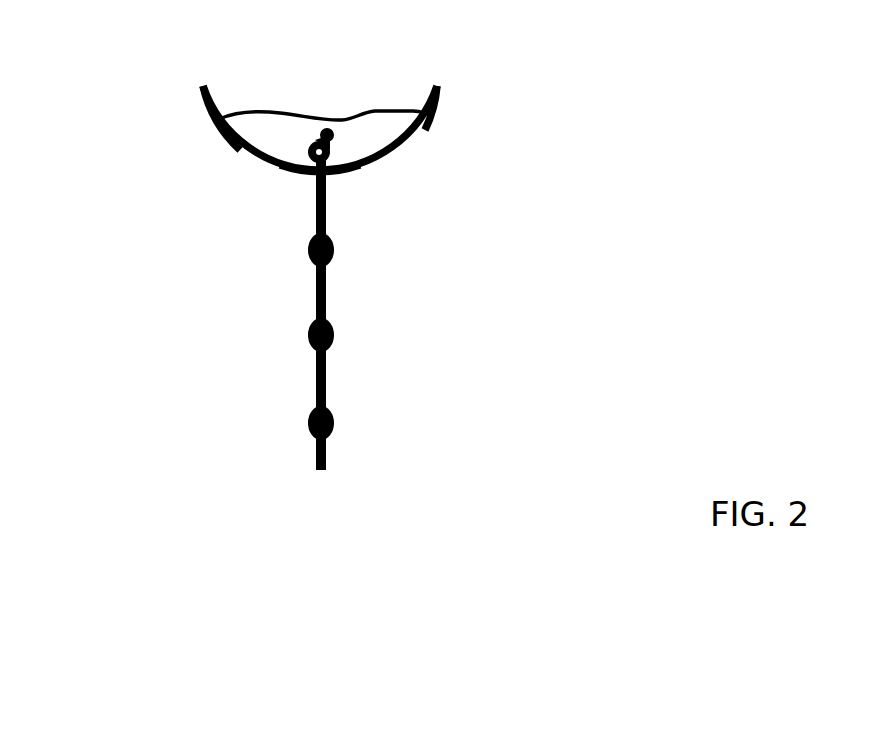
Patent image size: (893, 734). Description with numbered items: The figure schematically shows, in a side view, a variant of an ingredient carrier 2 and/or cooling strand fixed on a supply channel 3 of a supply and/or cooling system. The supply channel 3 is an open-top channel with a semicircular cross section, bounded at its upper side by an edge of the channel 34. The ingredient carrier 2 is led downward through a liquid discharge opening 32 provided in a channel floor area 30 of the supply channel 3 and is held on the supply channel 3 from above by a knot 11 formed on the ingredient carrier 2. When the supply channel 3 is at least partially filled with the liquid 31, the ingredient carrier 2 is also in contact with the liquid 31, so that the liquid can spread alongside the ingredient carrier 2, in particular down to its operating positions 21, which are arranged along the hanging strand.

The ingredient carrier 2 is at (326, 387).
The operating positions 21 is at (333, 250).
The supply channel 3 is at (441, 105).
The edge of the channel 34 is at (439, 82).
The channel floor area 30 is at (218, 138).
The liquid 31 is at (368, 145).
The knot 11 is at (336, 160).
The liquid discharge opening 32 is at (316, 171).